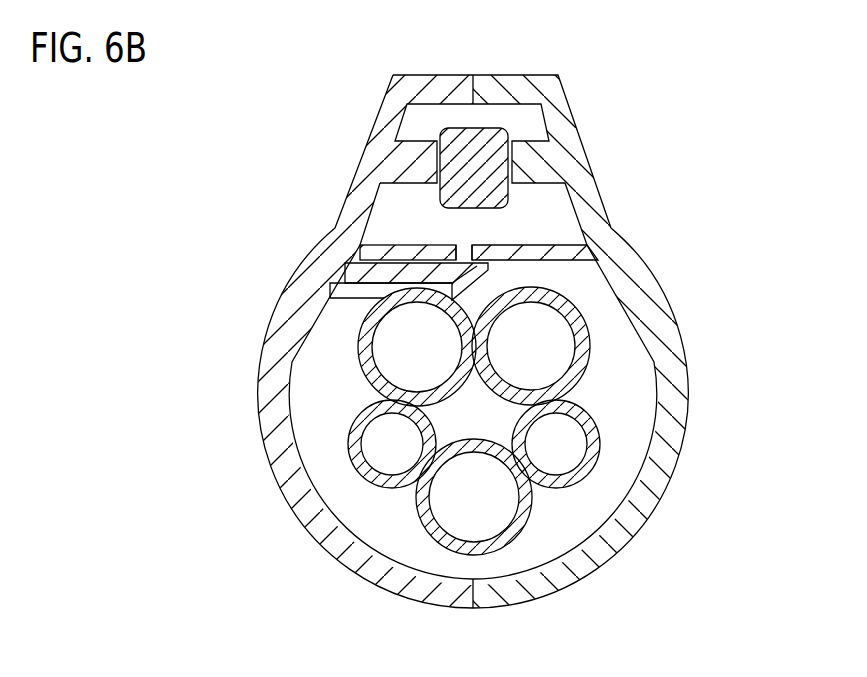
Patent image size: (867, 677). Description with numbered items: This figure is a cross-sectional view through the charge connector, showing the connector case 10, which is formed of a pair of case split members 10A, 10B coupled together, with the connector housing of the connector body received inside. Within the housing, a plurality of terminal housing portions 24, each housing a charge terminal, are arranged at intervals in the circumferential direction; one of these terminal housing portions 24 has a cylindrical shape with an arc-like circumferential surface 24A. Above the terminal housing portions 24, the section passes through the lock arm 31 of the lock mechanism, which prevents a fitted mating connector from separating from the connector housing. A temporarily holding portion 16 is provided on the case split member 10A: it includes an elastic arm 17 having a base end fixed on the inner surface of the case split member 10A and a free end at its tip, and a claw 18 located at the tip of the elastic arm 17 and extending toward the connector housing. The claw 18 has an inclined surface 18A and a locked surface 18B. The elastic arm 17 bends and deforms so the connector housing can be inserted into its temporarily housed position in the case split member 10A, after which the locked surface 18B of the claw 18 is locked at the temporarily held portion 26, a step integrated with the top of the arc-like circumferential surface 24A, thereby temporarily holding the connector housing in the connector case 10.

The connector case 10 is at (452, 321).
The case split member 10A is at (400, 87).
The case split member 10B is at (488, 83).
The temporarily holding portion 16 is at (348, 323).
The elastic arm 17 is at (380, 253).
The claw 18 is at (316, 332).
The inclined surface 18A is at (357, 339).
The locked surface 18B is at (470, 297).
The terminal housing portion 24 is at (469, 398).
The arc-like circumferential surface 24A is at (377, 273).
The temporarily held portion 26 is at (475, 300).
The lock arm 31 is at (490, 183).